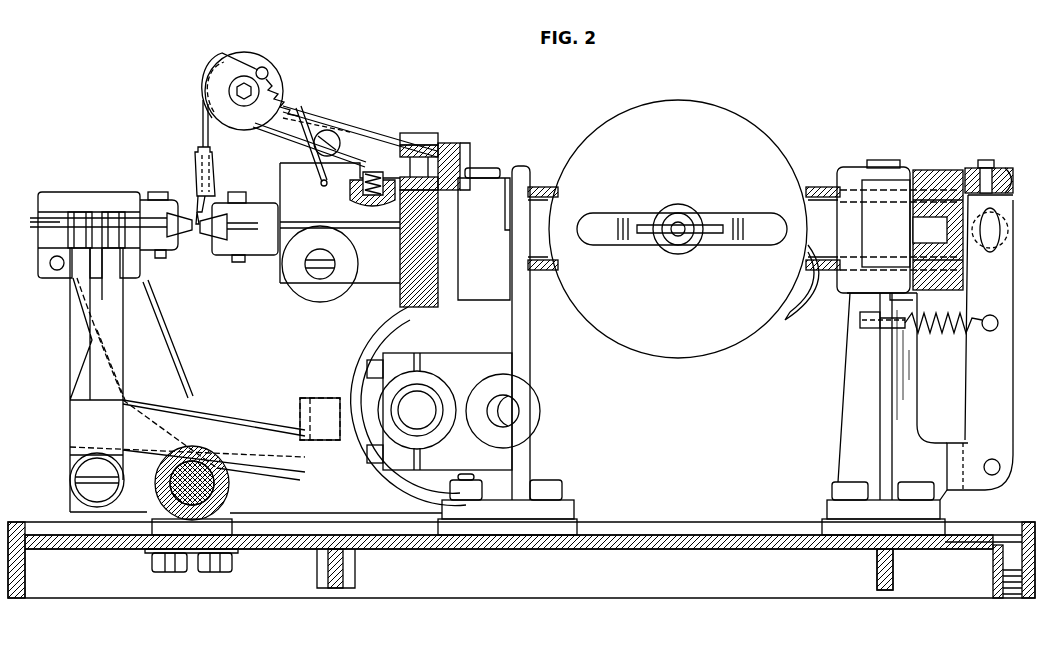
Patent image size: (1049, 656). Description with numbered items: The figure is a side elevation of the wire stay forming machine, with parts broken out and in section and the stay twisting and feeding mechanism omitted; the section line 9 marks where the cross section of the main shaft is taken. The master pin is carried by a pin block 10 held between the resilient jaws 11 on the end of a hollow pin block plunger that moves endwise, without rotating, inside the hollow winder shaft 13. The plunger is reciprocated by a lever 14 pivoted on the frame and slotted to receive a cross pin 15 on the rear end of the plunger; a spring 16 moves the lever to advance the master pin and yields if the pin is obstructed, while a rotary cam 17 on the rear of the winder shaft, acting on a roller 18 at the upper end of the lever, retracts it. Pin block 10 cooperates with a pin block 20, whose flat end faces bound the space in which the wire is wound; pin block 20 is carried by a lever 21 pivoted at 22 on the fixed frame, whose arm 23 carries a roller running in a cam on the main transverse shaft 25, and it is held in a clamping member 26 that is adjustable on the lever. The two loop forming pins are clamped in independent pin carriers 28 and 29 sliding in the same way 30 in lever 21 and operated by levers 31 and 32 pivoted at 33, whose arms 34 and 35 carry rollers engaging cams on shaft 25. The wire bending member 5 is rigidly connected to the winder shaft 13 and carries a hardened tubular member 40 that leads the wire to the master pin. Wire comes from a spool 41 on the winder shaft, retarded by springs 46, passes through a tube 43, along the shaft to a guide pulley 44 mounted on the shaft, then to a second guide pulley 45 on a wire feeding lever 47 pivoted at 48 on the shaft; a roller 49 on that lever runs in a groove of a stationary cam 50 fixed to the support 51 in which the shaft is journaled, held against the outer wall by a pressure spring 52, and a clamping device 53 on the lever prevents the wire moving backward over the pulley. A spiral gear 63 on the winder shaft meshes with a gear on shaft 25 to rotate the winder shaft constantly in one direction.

The wire bending member 5 is at (205, 196).
The section line 9— 9 is at (300, 632).
The pin block 10 is at (222, 250).
The resilient jaws 11 is at (246, 245).
The hollow winder shaft 13 is at (936, 190).
The lever 14 is at (1012, 342).
The cross pin 15 is at (1000, 224).
The spring 16 is at (966, 330).
The rotary cam 17 is at (975, 180).
The roller 18 is at (1010, 188).
The pin block 20 is at (186, 238).
The lever 21 is at (181, 381).
The pivot 22 is at (212, 487).
The arm 23 is at (323, 487).
The main transverse shaft 25 is at (424, 410).
The clamping member 26 is at (158, 262).
The pin carrier 28 is at (80, 215).
The pin carrier 29 is at (115, 215).
The groove or way 30 is at (45, 240).
The lever 31 is at (72, 328).
The lever 32 is at (120, 330).
The pivot 33 is at (85, 477).
The arm 34 is at (224, 422).
The arm 35 is at (262, 432).
The tubular member 40 is at (192, 202).
The spool 41 is at (718, 115).
The tube 43 is at (798, 322).
The guide pulley 44 is at (332, 300).
The guide pulley 45 is at (278, 90).
The springs 46 is at (731, 226).
The wire feeding lever 47 is at (349, 150).
The pivot 48 is at (328, 130).
The roller 49 is at (450, 145).
The stationary cam 50 is at (462, 152).
The support 51 is at (492, 192).
The pressure spring 52 is at (378, 165).
The clamping device 53 is at (222, 70).
The spiral gear 63 is at (438, 300).